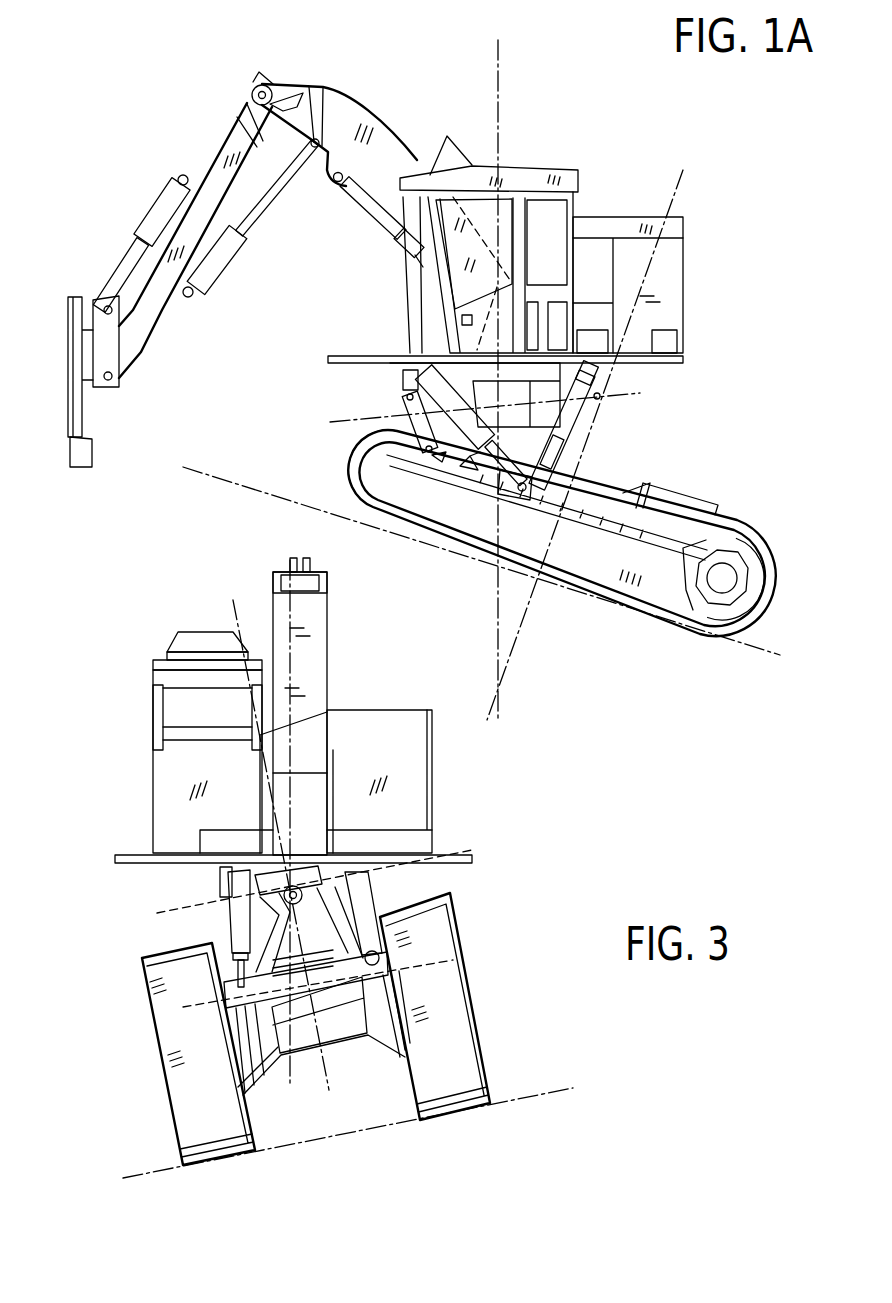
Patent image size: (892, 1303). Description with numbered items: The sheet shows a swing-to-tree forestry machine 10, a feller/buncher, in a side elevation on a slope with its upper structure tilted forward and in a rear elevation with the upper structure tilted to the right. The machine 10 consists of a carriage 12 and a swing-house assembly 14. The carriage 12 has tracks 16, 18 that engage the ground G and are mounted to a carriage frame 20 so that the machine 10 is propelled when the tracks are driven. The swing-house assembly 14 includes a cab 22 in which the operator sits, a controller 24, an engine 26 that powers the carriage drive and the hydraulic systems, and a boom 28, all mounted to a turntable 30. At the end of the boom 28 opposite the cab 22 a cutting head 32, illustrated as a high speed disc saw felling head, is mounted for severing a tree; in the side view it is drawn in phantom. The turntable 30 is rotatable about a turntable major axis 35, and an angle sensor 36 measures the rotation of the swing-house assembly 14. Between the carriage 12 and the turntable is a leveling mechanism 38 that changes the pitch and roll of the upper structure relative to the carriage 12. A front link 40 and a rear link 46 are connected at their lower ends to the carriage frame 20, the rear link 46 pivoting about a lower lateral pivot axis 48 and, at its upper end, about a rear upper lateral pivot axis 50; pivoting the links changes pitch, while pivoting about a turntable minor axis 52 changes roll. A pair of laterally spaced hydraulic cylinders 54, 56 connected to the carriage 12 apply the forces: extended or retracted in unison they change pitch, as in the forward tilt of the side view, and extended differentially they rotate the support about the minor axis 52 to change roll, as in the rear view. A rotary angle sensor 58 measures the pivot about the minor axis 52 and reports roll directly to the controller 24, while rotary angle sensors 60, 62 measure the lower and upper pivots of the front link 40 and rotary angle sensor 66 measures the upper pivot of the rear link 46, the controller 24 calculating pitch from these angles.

In FIG. 1A, the forestry machine 10 is at (682, 128).
In FIG. 3, the forestry machine 10 is at (128, 694).
In FIG. 1A, the carriage 12 is at (710, 477).
In FIG. 3, the carriage 12 is at (143, 1047).
In FIG. 1A, the swing-house assembly 14 is at (690, 276).
In FIG. 3, the swing-house assembly 14 is at (152, 779).
In FIG. 1A, the track 16 is at (752, 532).
In FIG. 3, the track 16 is at (160, 1067).
In FIG. 3, the track 18 is at (473, 1011).
In FIG. 1A, the carriage frame 20 is at (627, 585).
In FIG. 3, the carriage frame 20 is at (383, 1052).
In FIG. 1A, the cab 22 is at (556, 166).
In FIG. 3, the cab 22 is at (206, 632).
In FIG. 1A, the controller 24 is at (534, 298).
In FIG. 1A, the engine 26 is at (681, 217).
In FIG. 3, the engine 26 is at (378, 710).
In FIG. 1A, the boom 28 is at (286, 76).
In FIG. 3, the boom 28 is at (340, 590).
In FIG. 1A, the turntable 30 is at (340, 356).
In FIG. 3, the turntable 30 is at (137, 855).
In FIG. 1A, the cutting head 32 is at (82, 418).
In FIG. 3, the cutting head 32 is at (344, 893).
In FIG. 1A, the turntable major axis 35 is at (498, 92).
In FIG. 3, the turntable major axis 35 is at (290, 620).
In FIG. 1A, the angle sensor 36 is at (588, 420).
In FIG. 1A, the leveling mechanism 38 is at (322, 398).
In FIG. 3, the leveling mechanism 38 is at (218, 883).
In FIG. 1A, the front link 40 is at (372, 450).
In FIG. 1A, the rear link 46 is at (578, 450).
In FIG. 3, the rear link 46 is at (350, 973).
In FIG. 3, the lower lateral pivot axis 48 is at (418, 960).
In FIG. 3, the rear upper lateral pivot axis 50 is at (168, 915).
In FIG. 1A, the turntable minor axis 52 is at (640, 400).
In FIG. 1A, the hydraulic cylinder 54 is at (472, 466).
In FIG. 3, the hydraulic cylinder 54 is at (230, 930).
In FIG. 3, the hydraulic cylinder 56 is at (388, 928).
In FIG. 3, the rotary angle sensor 58 is at (295, 882).
In FIG. 1A, the rotary angle sensor 60 is at (419, 473).
In FIG. 1A, the rotary angle sensor 62 is at (396, 404).
In FIG. 1A, the rotary angle sensor 66 is at (600, 383).
In FIG. 1A, the ground G is at (218, 468).
In FIG. 3, the ground G is at (545, 1093).